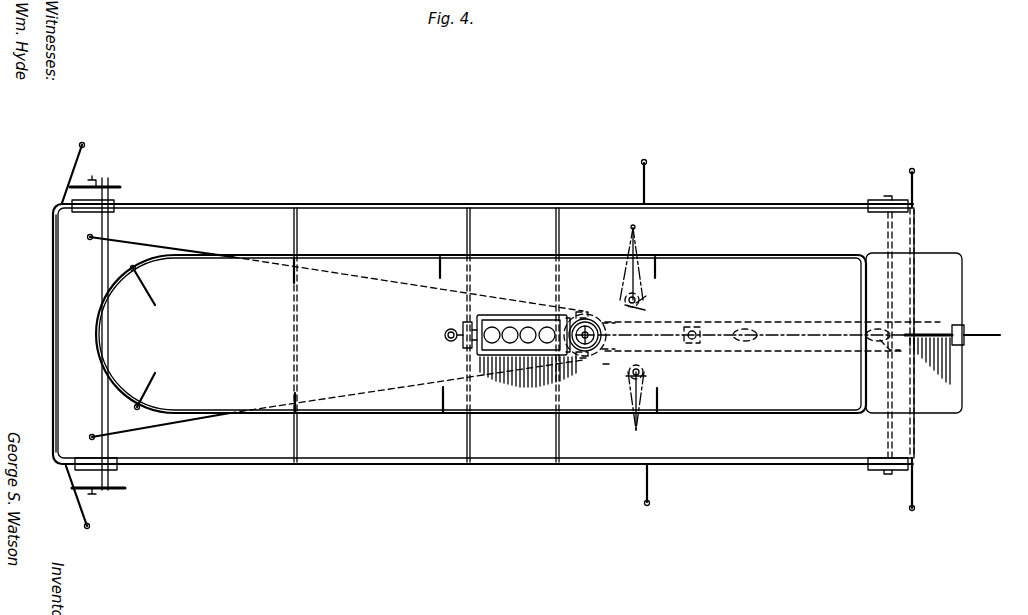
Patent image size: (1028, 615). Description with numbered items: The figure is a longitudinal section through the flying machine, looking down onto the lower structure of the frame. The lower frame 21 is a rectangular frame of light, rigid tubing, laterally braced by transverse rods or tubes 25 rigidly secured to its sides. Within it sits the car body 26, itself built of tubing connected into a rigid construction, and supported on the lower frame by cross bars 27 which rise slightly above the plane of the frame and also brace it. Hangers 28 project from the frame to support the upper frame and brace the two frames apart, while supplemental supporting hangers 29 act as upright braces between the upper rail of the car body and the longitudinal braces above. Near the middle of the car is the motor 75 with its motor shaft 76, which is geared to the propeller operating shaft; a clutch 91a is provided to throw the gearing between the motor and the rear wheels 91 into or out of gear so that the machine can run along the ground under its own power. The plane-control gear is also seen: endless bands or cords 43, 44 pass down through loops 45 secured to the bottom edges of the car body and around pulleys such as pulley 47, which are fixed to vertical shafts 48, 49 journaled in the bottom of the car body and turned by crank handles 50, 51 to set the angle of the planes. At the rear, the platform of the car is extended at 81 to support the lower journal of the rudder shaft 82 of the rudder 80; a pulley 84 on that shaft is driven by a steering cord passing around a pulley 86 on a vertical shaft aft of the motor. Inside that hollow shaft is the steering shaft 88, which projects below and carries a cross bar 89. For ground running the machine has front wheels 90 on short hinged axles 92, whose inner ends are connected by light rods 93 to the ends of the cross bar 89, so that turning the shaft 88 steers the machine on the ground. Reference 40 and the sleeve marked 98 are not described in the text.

The lower frame 21 is at (201, 198).
The rods or tubes 25 is at (53, 254).
The car body 26 is at (481, 334).
The cross bars 27 is at (101, 272).
The hangers 28 is at (74, 173).
The supplemental supporting hangers 29 is at (157, 374).
The shaft 40 is at (640, 368).
The endless band or cord 43 is at (640, 435).
The endless band or cord 44 is at (645, 256).
The loops 45 is at (630, 249).
The pulley 47 is at (625, 300).
The vertical shaft 48 is at (630, 375).
The vertical shaft 49 is at (644, 307).
The crank handle 50 is at (654, 373).
The crank handle 51 is at (640, 300).
The motor 75 is at (512, 315).
The motor shaft 76 is at (470, 332).
The rudder 80 is at (990, 337).
The platform extension 81 is at (936, 264).
The rudder shaft 82 is at (962, 330).
The pulley 84 is at (953, 322).
The pulley 86 is at (605, 366).
The steering shaft 88 is at (590, 329).
The cross bar 89 is at (586, 313).
The front wheels 90 is at (113, 185).
The rear wheels 91 is at (89, 222).
The clutch 91a is at (695, 343).
The short hinged axles 92 is at (92, 450).
The rods 93 is at (336, 338).
The sleeve 98 is at (619, 335).